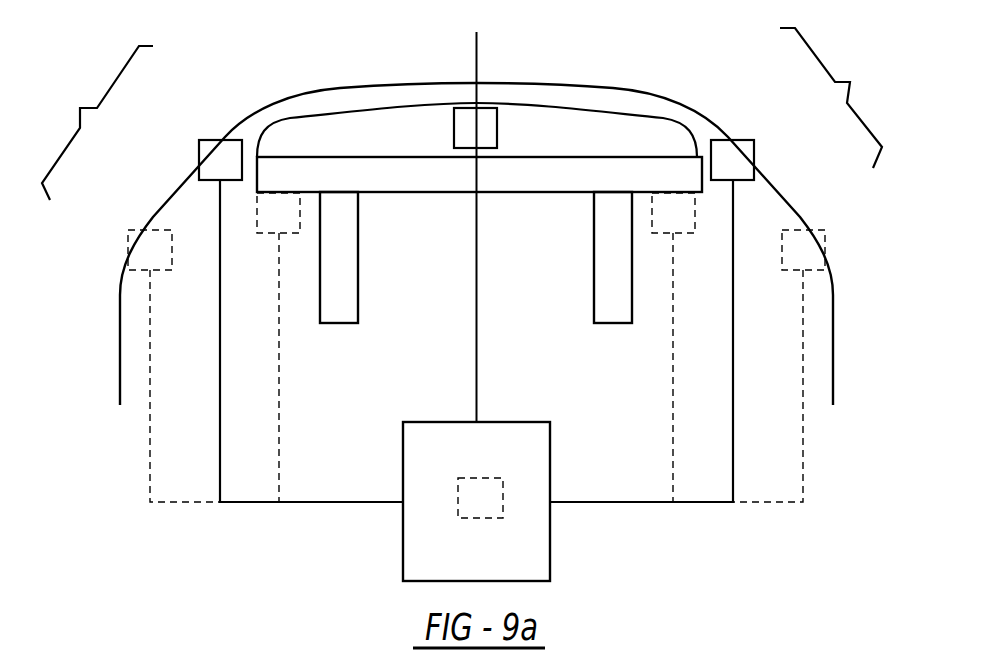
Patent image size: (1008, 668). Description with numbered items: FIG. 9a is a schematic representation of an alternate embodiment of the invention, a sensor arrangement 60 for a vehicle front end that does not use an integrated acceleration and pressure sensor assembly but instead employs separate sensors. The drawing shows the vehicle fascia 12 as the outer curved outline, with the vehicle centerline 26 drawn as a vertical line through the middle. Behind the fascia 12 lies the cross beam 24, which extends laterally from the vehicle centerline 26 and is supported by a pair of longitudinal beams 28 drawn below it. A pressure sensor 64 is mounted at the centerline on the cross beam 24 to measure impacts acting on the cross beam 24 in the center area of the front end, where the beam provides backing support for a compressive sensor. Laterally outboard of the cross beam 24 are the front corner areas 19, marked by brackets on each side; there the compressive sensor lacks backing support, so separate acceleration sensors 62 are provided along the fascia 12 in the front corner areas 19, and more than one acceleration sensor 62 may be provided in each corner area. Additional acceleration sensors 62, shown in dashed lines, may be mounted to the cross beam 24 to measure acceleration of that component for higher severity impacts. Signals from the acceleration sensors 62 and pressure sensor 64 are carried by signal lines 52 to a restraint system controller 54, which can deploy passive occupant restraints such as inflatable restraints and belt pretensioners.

The fascia 12 is at (398, 82).
The front corner areas 19 is at (462, 114).
The cross beam 24 is at (537, 193).
The vehicle centerline 26 is at (476, 55).
The longitudinal beam 28 is at (358, 268).
The signal lines 52 is at (477, 365).
The restraint system controller 54 is at (550, 530).
The sensor arrangement 60 is at (451, 46).
The acceleration sensors 62 is at (204, 140).
The pressure sensor 64 is at (497, 128).